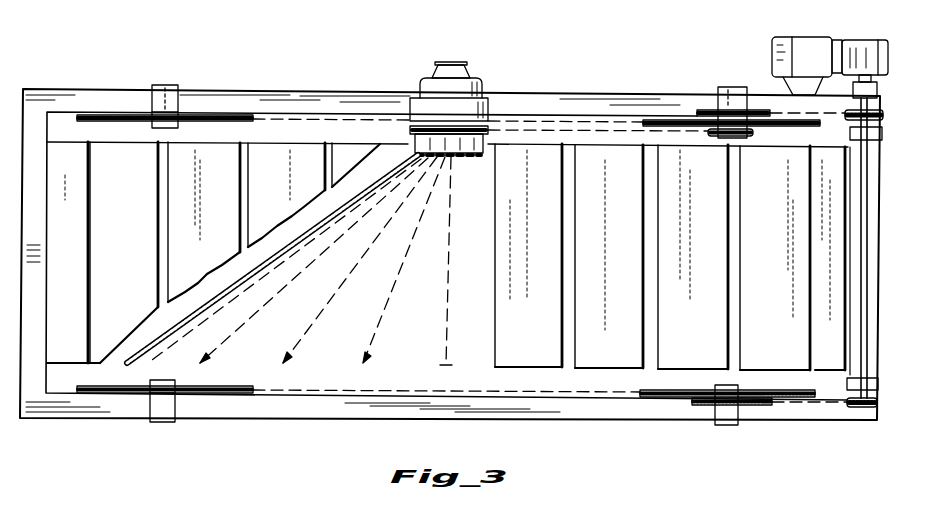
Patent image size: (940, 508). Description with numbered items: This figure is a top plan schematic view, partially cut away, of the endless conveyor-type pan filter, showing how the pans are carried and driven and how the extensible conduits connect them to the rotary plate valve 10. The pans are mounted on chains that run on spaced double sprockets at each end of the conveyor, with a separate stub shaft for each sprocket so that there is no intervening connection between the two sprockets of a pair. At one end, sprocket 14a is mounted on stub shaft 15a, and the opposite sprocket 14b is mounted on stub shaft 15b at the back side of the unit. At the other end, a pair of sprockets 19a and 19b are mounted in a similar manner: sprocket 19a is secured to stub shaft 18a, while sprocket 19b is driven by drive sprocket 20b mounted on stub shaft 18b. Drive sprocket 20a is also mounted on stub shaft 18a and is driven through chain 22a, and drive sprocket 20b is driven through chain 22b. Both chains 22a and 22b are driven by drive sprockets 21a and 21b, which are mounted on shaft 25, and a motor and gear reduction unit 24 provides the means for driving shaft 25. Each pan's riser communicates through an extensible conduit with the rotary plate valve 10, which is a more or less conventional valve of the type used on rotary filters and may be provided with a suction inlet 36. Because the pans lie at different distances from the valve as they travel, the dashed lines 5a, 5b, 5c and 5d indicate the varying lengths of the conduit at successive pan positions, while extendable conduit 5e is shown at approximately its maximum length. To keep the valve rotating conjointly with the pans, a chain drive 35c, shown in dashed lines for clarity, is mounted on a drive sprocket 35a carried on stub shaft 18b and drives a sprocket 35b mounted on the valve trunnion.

The dash line position of extensible conduit 5a is at (385, 320).
The dash line position of extensible conduit 5b is at (318, 318).
The dash line position of extensible conduit 5c is at (247, 327).
The dash line position of extensible conduit 5d is at (197, 330).
The extendable conduit at approximately maximum length 5e is at (158, 340).
The rotary plate valve 10 is at (487, 75).
The sprocket 14a is at (97, 393).
The sprocket 14b is at (107, 115).
The stub shaft 15a is at (162, 412).
The stub shaft 15b is at (172, 93).
The stub shaft 18a is at (728, 415).
The stub shaft 18b is at (725, 88).
The sprocket 19a is at (653, 397).
The sprocket 19b is at (655, 120).
The drive sprocket 20a is at (707, 405).
The drive sprocket 20b is at (695, 110).
The drive sprocket 21a is at (879, 401).
The drive sprocket 21b is at (880, 113).
The chain 22a is at (822, 404).
The chain 22b is at (782, 112).
The motor and gear reduction unit 24 is at (810, 45).
The shaft 25 is at (867, 212).
The drive sprocket 35a is at (752, 136).
The sprocket 35b is at (488, 132).
The chain drive 35c is at (549, 130).
The suction inlet 36 is at (442, 62).